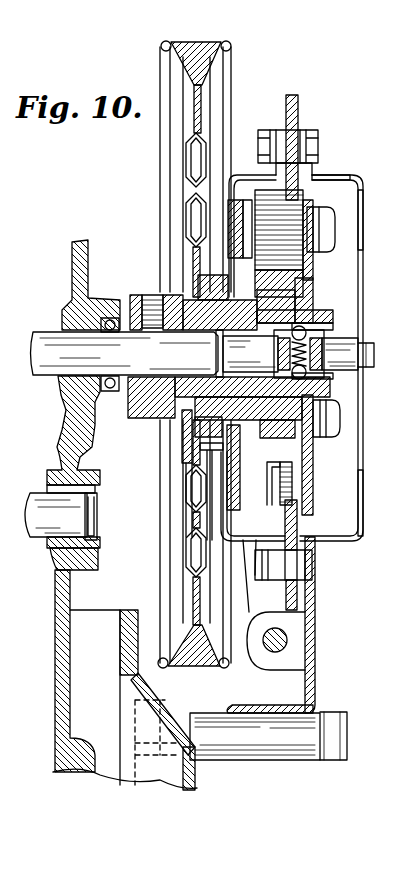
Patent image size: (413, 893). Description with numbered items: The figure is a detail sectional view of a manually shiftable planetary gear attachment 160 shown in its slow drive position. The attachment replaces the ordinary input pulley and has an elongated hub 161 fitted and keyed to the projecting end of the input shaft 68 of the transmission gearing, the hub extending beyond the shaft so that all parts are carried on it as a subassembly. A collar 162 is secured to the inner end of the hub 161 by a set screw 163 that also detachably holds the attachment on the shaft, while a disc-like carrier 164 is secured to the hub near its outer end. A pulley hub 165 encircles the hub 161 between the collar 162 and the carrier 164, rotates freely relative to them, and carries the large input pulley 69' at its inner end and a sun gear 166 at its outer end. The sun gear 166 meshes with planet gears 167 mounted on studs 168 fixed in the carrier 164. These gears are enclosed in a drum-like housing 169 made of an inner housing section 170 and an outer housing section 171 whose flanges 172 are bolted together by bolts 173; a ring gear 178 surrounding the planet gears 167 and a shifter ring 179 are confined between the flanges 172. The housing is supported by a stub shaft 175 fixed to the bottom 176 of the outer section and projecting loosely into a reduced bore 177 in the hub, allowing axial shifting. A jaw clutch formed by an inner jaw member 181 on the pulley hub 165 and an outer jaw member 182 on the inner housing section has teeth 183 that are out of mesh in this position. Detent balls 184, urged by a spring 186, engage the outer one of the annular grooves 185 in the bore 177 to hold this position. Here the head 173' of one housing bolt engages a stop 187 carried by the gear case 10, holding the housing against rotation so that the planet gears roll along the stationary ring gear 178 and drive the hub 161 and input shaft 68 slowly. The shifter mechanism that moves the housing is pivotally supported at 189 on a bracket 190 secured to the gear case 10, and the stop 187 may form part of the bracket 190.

The gear case 10 is at (65, 644).
The input shaft 68 is at (46, 338).
The input pulley 69' is at (173, 350).
The planetary gear attachment 160 is at (117, 186).
The hub 161 is at (335, 386).
The collar 162 is at (150, 410).
The set screw 163 is at (157, 294).
The carrier 164 is at (313, 268).
The pulley hub 165 is at (313, 292).
The sun gear 166 is at (310, 450).
The planet gears 167 is at (300, 196).
The studs 168 is at (314, 228).
The housing 169 is at (345, 176).
The inner housing section 170 is at (240, 176).
The outer housing section 171 is at (363, 188).
The flanges 172 is at (289, 136).
The bolts 173 is at (306, 133).
The head 173' is at (313, 565).
The stub shaft 175 is at (356, 334).
The bottom 176 is at (350, 512).
The reduced bore 177 is at (247, 353).
The ring gear 178 is at (292, 526).
The shifter ring 179 is at (287, 598).
The inner jaw member 181 is at (202, 434).
The outer jaw member 182 is at (238, 486).
The teeth 183 is at (188, 270).
The detent balls 184 is at (333, 372).
The annular grooves 185 is at (333, 316).
The spring 186 is at (374, 355).
The stop 187 is at (316, 604).
The pivot 189 is at (287, 641).
The bracket 190 is at (305, 674).